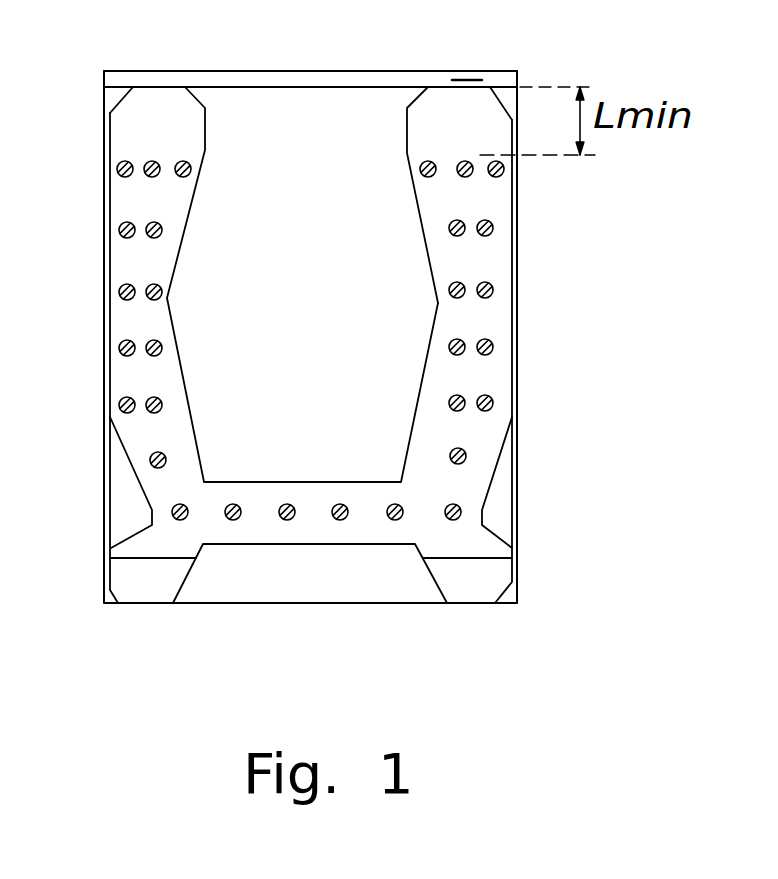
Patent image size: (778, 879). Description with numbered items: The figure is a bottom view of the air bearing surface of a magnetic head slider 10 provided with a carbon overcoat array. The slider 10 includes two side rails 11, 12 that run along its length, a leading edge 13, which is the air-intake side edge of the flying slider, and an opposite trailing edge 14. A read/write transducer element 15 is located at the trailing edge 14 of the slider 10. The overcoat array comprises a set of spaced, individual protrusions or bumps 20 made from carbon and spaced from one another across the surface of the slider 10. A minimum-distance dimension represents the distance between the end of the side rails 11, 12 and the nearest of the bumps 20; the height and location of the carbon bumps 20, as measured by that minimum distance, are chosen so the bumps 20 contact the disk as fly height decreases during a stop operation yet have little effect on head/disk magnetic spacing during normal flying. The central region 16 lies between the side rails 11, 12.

The slider 10 is at (506, 420).
The side rail 11 is at (459, 317).
The side rail 12 is at (157, 317).
The leading edge 13 is at (468, 582).
The trailing edge 14 is at (368, 48).
The read/write transducer element 15 is at (473, 77).
The central recess 16 is at (302, 366).
The bumps 20 is at (118, 168).